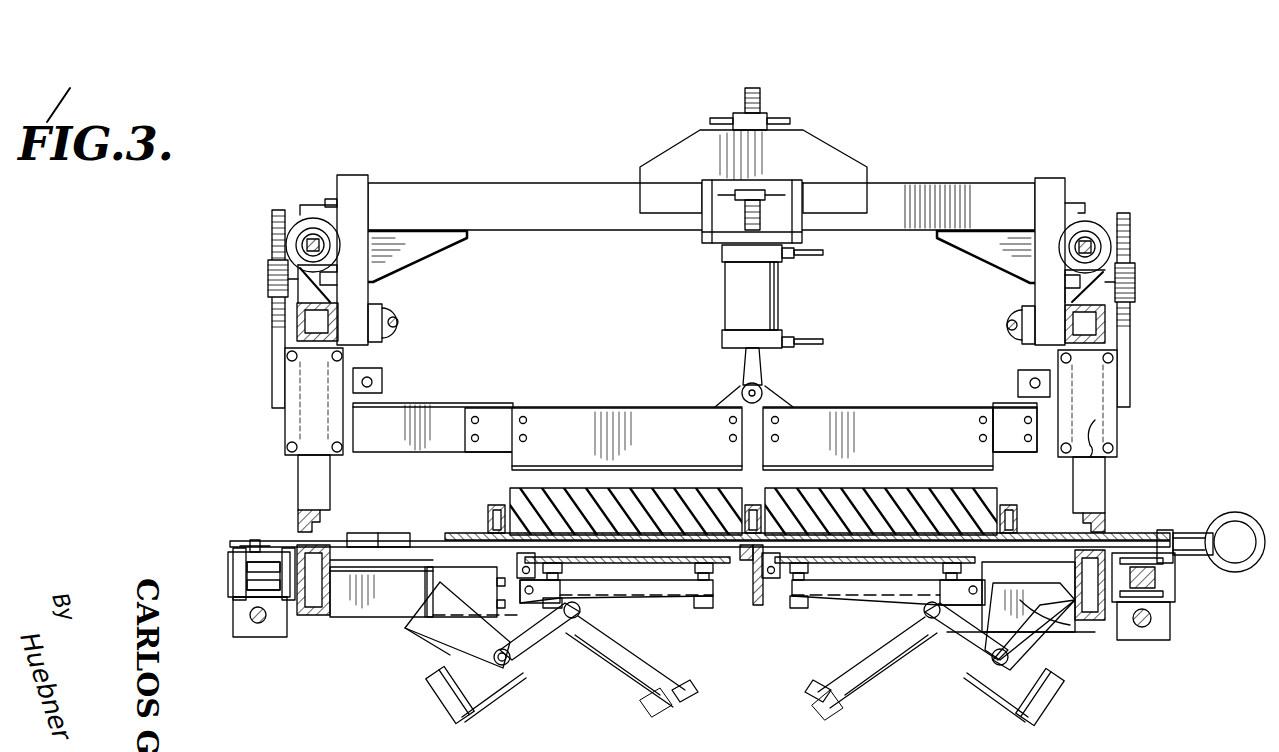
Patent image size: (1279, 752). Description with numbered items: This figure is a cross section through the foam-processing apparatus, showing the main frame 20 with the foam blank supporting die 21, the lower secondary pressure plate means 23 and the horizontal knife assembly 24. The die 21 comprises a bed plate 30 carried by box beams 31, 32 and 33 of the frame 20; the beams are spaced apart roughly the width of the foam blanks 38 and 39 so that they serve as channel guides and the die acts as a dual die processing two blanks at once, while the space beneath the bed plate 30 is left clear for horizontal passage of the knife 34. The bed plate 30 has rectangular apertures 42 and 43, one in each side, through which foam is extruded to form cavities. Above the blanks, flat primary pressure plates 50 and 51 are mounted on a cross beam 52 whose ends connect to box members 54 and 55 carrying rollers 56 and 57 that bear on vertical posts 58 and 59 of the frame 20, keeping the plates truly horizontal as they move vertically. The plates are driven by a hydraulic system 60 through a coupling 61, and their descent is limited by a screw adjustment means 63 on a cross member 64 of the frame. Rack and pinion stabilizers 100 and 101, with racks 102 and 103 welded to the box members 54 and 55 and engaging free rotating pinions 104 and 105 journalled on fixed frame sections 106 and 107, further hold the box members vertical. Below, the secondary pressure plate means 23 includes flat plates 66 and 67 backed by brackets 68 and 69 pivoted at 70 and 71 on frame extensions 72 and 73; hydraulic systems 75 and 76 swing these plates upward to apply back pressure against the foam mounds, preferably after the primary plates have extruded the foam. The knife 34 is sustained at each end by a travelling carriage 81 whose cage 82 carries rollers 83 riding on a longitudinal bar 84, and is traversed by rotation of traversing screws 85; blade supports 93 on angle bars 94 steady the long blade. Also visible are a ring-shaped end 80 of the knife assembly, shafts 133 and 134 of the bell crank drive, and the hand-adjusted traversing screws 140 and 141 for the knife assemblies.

The main frame 20 is at (348, 618).
The foam blank supporting die 21 is at (462, 531).
The lower secondary pressure plate means 23 is at (833, 607).
The horizontal knife assembly 24 is at (1133, 540).
The bed plate 30 is at (1033, 534).
The box beam 31 is at (495, 507).
The box beam 32 is at (755, 522).
The box beam 33 is at (1010, 507).
The knife 34 is at (402, 535).
The foam blank 38 is at (550, 488).
The foam blank 39 is at (873, 488).
The aperture 42 is at (637, 533).
The aperture 43 is at (922, 533).
The flat plate 50 is at (532, 464).
The flat plate 51 is at (847, 464).
The cross beam 52 is at (421, 418).
The box member 54 is at (292, 420).
The box member 55 is at (1092, 385).
The roller 56 is at (287, 440).
The roller 57 is at (1113, 448).
The vertical post 58 is at (306, 484).
The vertical post 59 is at (1098, 486).
The hydraulic system 60 is at (790, 310).
The coupling 61 is at (748, 366).
The screw adjustment means 63 is at (770, 103).
The cross member 64 is at (528, 185).
The flat plate 66 is at (684, 568).
The flat plate 67 is at (872, 560).
The bracket 68 is at (610, 593).
The bracket 69 is at (902, 593).
The pivot 70 is at (530, 590).
The pivot 71 is at (975, 593).
The extension 72 is at (465, 590).
The extension 73 is at (1028, 632).
The hydraulic system 75 is at (440, 701).
The hydraulic system 76 is at (1015, 703).
The ring handle 80 is at (1236, 570).
The travelling carriage 81 is at (232, 633).
The cage 82 is at (235, 568).
The roller 83 is at (245, 597).
The longitudinal bar 84 is at (260, 573).
The traversing screw 85 is at (260, 622).
The blade support 93 is at (745, 555).
The angle bar 94 is at (765, 563).
The rack and pinion stabilizer 100 is at (272, 361).
The rack and pinion stabilizer 101 is at (1140, 343).
The rack 102 is at (270, 226).
The rack 103 is at (1130, 224).
The pinion 104 is at (268, 278).
The pinion 105 is at (1135, 271).
The fixed section 106 is at (305, 324).
The fixed section 107 is at (1066, 328).
The shaft 133 is at (1087, 235).
The shaft 134 is at (313, 245).
The traversing screw 140 is at (400, 322).
The traversing screw 141 is at (1000, 323).